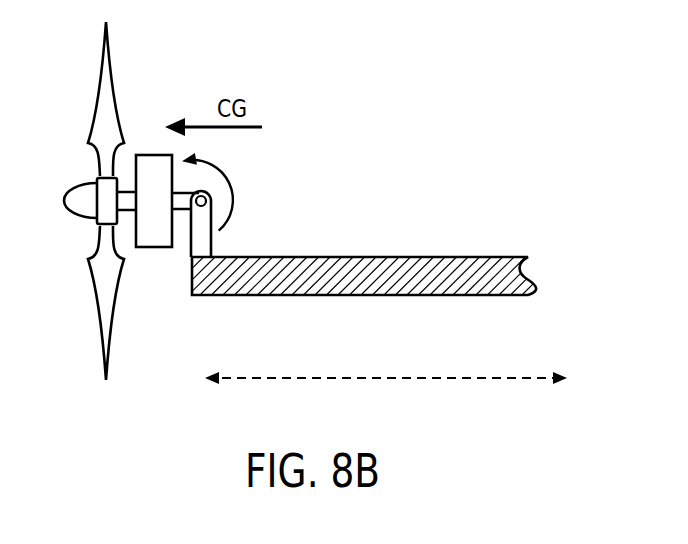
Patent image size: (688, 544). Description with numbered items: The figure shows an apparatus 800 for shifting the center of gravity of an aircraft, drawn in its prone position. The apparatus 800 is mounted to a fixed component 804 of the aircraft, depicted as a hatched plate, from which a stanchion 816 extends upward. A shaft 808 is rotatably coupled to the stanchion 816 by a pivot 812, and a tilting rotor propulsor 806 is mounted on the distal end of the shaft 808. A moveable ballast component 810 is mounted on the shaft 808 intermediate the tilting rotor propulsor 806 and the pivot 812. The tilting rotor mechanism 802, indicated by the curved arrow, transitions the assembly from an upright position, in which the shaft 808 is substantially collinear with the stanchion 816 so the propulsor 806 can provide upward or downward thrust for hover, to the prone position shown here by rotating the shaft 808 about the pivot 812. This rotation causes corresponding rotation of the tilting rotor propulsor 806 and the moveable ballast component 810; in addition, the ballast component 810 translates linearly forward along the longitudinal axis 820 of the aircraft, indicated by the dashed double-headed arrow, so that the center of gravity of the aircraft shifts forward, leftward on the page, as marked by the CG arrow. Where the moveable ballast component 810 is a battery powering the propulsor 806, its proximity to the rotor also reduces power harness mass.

The apparatus for shifting a center of gravity 800 is at (533, 100).
The tilting rotor mechanism 802 is at (266, 205).
The fixed component 804 is at (490, 295).
The tilting rotor propulsor 806 is at (92, 135).
The shaft 808 is at (123, 190).
The moveable ballast component 810 is at (152, 247).
The pivot 812 is at (197, 207).
The stanchion 816 is at (212, 242).
The longitudinal axis 820 is at (234, 378).